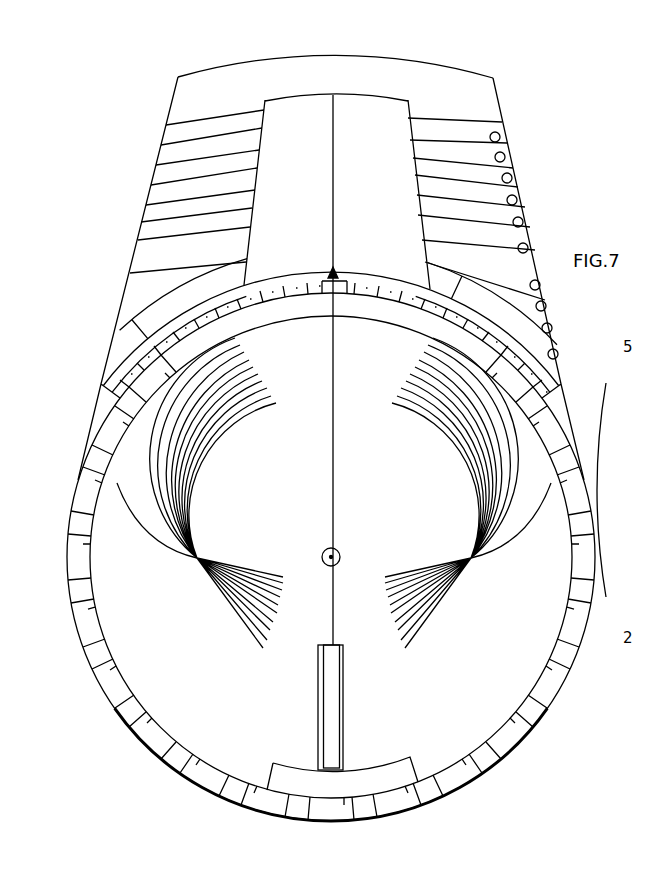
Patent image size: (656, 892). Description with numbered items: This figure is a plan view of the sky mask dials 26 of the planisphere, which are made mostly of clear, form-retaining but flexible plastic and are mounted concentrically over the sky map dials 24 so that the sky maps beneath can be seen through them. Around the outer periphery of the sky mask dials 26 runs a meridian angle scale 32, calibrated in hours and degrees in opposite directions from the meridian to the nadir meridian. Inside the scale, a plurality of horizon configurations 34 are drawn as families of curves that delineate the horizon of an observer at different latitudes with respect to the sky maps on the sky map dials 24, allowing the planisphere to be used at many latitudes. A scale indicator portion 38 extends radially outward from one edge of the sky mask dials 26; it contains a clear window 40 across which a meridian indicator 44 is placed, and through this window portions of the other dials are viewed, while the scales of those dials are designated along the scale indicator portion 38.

The sky map dials 24 is at (162, 762).
The sky mask dials 26 is at (447, 788).
The meridian angle scale 32 is at (537, 716).
The horizon configurations 34 is at (230, 612).
The scale indicator portions 38 is at (497, 95).
The clear window 40 is at (258, 155).
The meridian indicator 44 is at (334, 213).